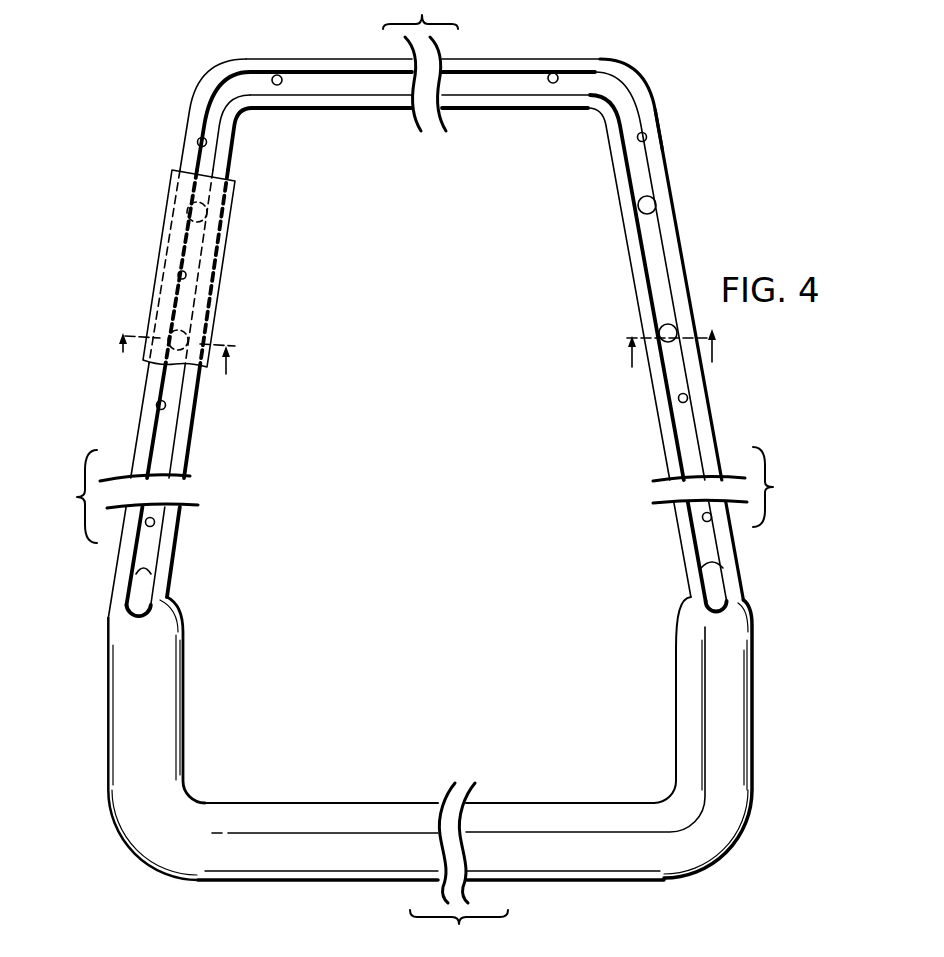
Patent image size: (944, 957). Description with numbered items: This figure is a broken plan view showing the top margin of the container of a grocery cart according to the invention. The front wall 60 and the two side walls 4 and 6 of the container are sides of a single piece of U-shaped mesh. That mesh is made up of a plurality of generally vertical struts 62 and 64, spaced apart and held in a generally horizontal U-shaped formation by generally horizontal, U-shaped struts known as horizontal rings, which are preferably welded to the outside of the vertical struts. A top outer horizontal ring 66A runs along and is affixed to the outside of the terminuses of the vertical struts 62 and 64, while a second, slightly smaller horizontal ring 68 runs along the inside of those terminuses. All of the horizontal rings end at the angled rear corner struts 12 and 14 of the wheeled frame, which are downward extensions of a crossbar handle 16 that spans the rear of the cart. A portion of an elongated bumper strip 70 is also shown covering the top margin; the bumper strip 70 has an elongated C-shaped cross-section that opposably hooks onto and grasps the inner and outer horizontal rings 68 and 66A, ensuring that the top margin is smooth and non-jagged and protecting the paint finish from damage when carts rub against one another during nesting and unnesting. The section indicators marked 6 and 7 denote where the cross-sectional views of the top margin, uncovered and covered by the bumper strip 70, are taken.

The front wall 60 is at (538, 58).
The side wall 4 is at (657, 122).
The side wall 6 is at (152, 128).
The section line 7- 7 is at (172, 370).
The vertical strut 64 is at (198, 142).
The vertical strut 62 is at (187, 212).
The top outer horizontal ring 66A is at (121, 550).
The second horizontal ring 68 is at (174, 549).
The bumper strip 70 is at (159, 262).
The corner strut 12 is at (740, 632).
The corner strut 14 is at (111, 640).
The crossbar handle 16 is at (598, 874).